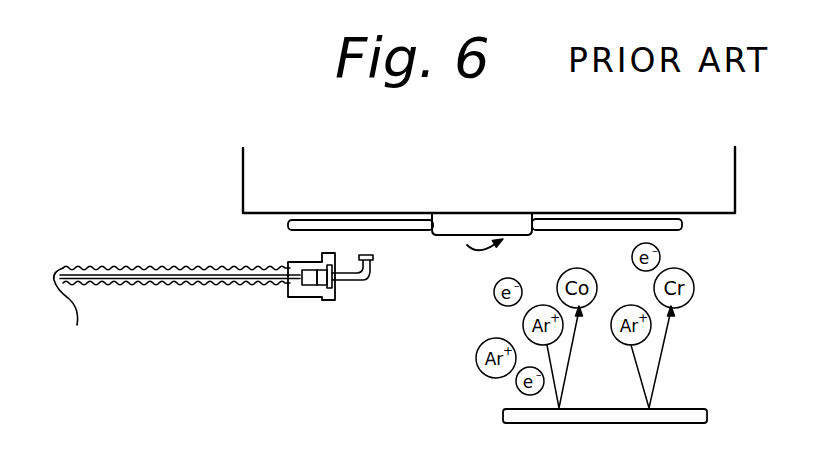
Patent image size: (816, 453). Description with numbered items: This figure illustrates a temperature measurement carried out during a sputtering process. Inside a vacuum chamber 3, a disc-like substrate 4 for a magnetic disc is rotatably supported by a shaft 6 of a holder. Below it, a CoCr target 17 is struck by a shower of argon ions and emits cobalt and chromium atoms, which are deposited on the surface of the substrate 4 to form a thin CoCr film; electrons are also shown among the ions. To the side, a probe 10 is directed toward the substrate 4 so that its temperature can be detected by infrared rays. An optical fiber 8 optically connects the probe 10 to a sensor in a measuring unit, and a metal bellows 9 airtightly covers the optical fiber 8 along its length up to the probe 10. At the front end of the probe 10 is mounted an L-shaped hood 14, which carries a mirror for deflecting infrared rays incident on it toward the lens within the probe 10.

The sputtering chamber 3 is at (735, 168).
The substrate 4 is at (682, 226).
The shaft 6 is at (475, 222).
The optical fiber 8 is at (71, 312).
The metal bellows 9 is at (105, 267).
The probe 10 is at (297, 298).
The L-shaped hood 14 is at (358, 284).
The CoCr target 17 is at (708, 416).